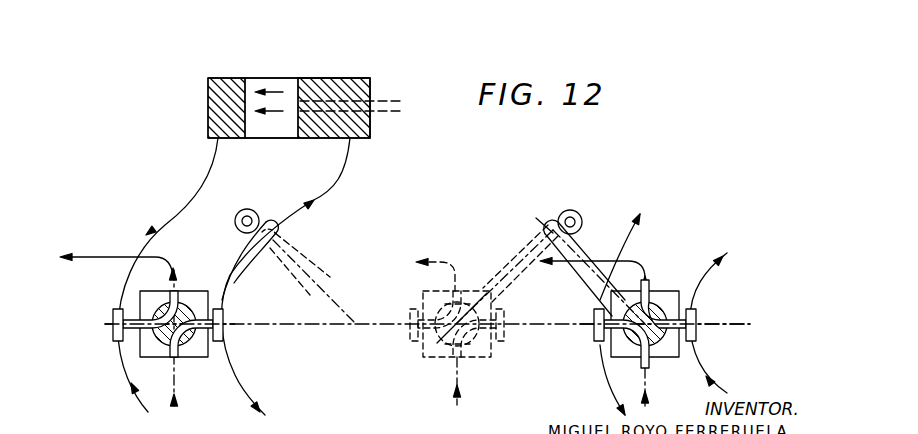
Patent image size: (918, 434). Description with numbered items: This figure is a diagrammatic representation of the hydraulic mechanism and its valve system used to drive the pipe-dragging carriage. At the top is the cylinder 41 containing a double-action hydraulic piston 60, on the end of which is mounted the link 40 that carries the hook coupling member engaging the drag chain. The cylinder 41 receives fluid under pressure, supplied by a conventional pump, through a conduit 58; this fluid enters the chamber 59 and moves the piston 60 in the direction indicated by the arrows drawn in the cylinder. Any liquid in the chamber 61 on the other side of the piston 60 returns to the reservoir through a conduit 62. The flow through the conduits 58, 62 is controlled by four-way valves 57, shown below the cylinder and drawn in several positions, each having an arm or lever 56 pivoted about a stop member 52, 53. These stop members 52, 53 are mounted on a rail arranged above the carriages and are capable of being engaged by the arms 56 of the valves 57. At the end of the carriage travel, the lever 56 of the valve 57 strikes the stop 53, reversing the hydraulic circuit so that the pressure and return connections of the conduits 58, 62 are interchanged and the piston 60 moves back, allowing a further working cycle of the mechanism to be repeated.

The link 40 is at (389, 112).
The cylinder 41 is at (323, 78).
The stop member 52 is at (251, 209).
The stop member 53 is at (582, 216).
The arm 56 is at (248, 267).
The four-way valve 57 is at (188, 300).
The conduit 58 is at (344, 177).
The chamber 59 is at (361, 79).
The double-action hydraulic piston 60 is at (278, 72).
The chamber 61 is at (236, 62).
The conduit 62 is at (192, 191).